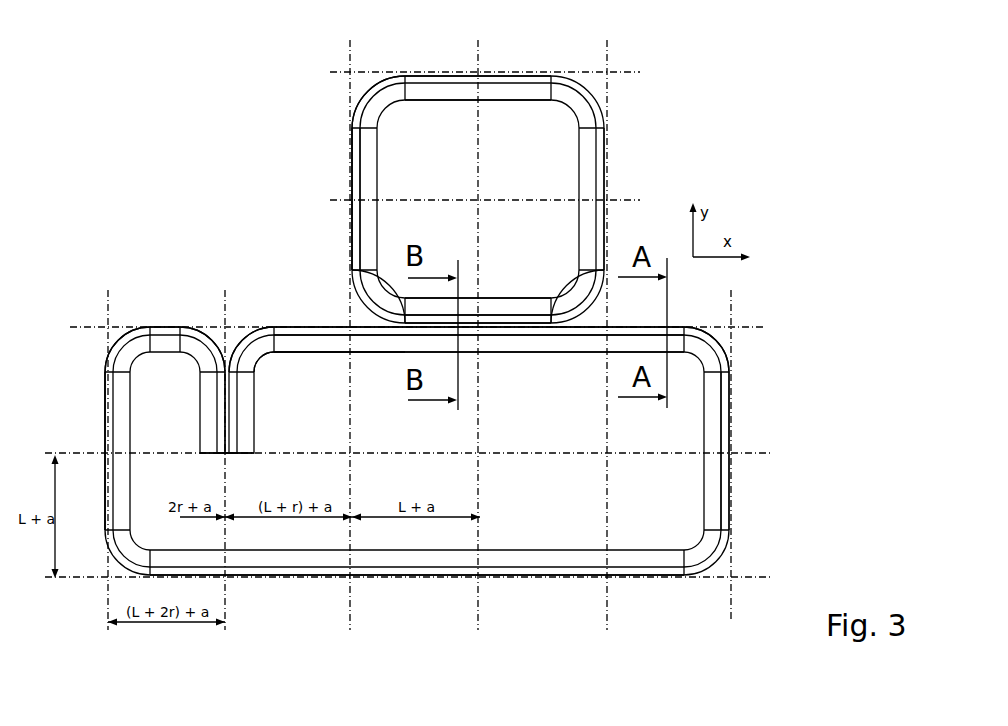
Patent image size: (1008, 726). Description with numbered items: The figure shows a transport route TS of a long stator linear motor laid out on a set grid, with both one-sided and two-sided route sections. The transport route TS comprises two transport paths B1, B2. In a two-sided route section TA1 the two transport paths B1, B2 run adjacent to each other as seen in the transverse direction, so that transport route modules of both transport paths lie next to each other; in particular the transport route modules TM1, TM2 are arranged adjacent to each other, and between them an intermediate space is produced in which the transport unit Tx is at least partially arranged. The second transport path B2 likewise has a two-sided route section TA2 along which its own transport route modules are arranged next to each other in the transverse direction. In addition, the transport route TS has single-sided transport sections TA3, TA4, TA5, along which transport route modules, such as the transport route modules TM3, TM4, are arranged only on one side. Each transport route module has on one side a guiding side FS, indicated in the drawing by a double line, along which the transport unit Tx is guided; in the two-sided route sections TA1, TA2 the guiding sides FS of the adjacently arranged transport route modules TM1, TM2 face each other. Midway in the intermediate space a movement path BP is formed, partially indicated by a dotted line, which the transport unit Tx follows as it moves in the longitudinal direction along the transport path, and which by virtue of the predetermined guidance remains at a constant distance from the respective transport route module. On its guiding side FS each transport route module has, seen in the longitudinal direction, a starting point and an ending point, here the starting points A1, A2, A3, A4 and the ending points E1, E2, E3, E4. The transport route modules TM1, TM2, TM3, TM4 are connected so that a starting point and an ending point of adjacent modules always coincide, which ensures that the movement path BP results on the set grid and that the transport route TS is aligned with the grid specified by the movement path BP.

The first transport path B1 is at (513, 92).
The second transport path B2 is at (530, 560).
The transport route TS is at (215, 118).
The guiding side FS is at (353, 138).
The movement path BP is at (350, 227).
The starting point A1 is at (352, 200).
The starting point A2 is at (350, 332).
The starting point A3 is at (607, 327).
The starting point A4 is at (237, 453).
The ending point E1 is at (480, 320).
The ending point E2 is at (478, 323).
The ending point E3 is at (727, 453).
The ending point E4 is at (357, 355).
The transport route module TM1 is at (472, 313).
The transport route module TM2 is at (468, 343).
The transport route module TM3 is at (723, 347).
The transport route module TM4 is at (260, 368).
The two-sided route section TA1 is at (518, 288).
The two-sided route section TA2 is at (193, 435).
The single-sided transport section TA3 is at (732, 407).
The single-sided transport section TA4 is at (287, 323).
The single-sided transport section TA5 is at (612, 140).
The transport unit Tx is at (503, 328).